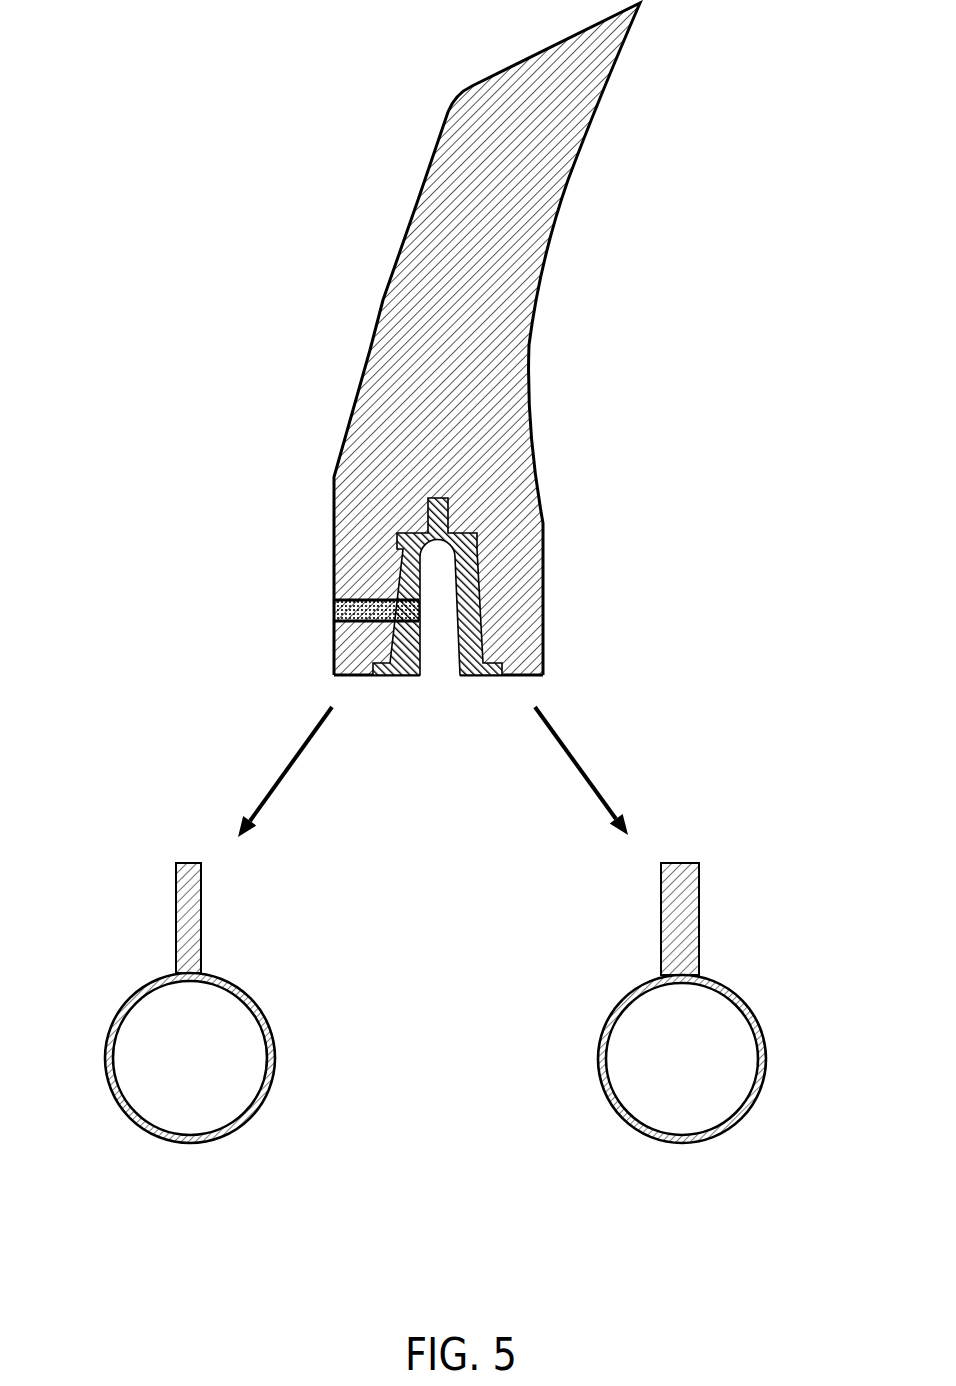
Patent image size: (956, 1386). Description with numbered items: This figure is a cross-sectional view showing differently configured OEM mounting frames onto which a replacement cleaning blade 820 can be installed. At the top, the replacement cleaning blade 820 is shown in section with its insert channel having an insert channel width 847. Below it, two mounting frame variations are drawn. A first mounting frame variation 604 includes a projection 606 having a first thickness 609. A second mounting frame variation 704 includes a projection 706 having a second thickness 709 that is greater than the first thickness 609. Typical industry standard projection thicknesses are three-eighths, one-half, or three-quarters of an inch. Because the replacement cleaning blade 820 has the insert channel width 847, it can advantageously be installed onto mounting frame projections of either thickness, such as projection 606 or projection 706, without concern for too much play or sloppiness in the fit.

The replacement cleaning blade 820 is at (260, 102).
The insert channel width 847 is at (420, 573).
The first mounting frame variation 604 is at (121, 1139).
The projection 606 is at (176, 925).
The first thickness 609 is at (237, 848).
The second mounting frame variation 704 is at (750, 1141).
The projection 706 is at (699, 920).
The second thickness 709 is at (623, 848).